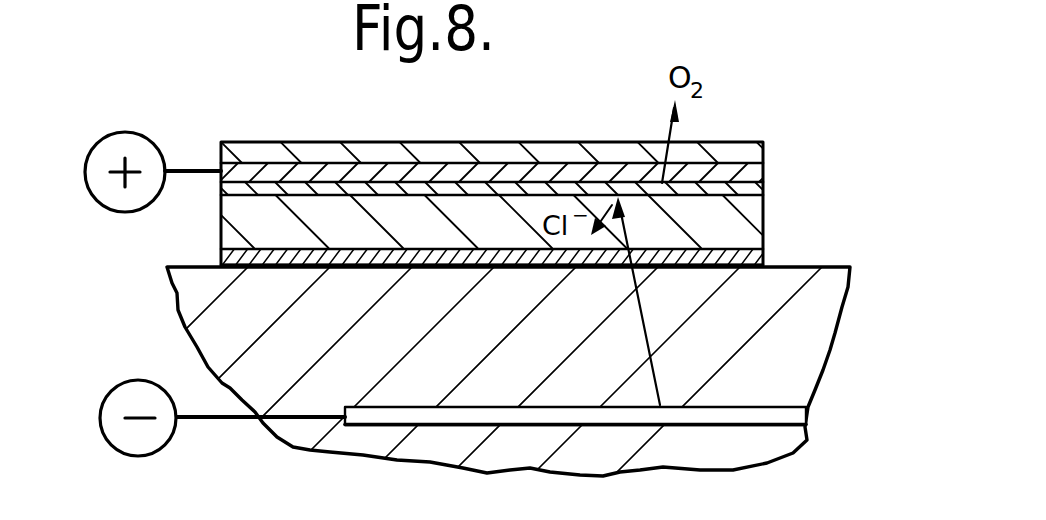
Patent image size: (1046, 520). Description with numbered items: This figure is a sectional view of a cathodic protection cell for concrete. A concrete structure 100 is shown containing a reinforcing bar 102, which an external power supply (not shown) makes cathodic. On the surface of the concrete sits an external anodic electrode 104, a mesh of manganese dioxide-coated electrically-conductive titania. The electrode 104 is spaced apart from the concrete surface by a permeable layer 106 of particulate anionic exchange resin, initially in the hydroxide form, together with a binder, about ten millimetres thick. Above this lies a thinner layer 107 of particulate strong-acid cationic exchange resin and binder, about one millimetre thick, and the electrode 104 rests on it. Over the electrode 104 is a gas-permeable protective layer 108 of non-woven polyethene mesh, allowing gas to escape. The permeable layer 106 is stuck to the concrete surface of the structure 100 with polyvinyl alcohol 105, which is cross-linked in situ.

The concrete structure 100 is at (812, 348).
The reinforcing bar 102 is at (418, 415).
The external anodic electrode 104 is at (753, 170).
The polyvinyl alcohol 105 is at (222, 257).
The permeable layer 106 is at (753, 225).
The thinner layer 107 is at (757, 188).
The gas-permeable protective layer 108 is at (727, 148).